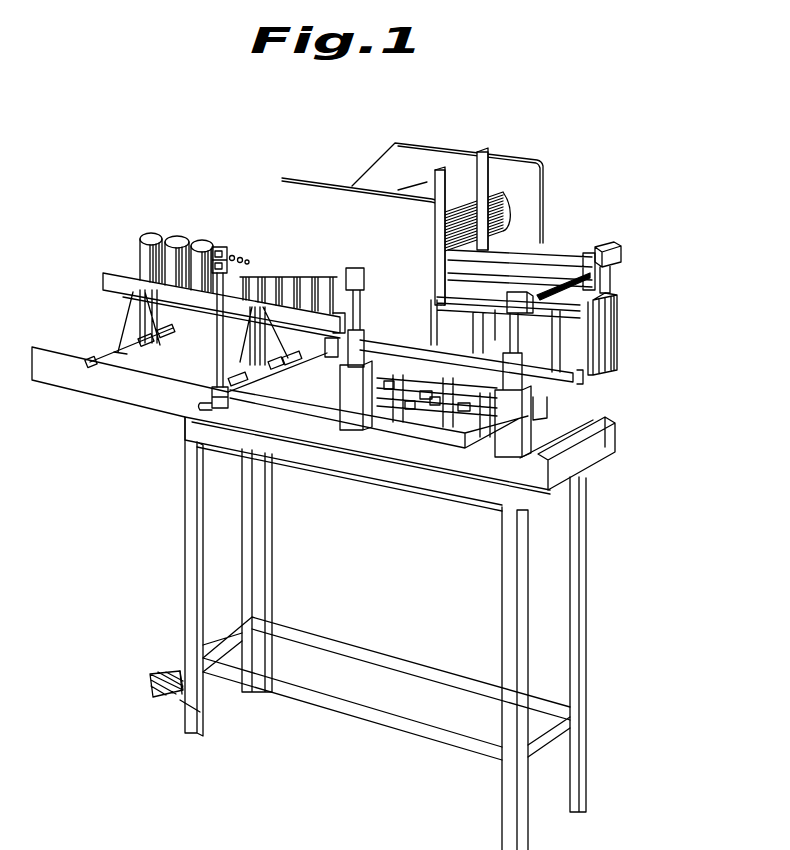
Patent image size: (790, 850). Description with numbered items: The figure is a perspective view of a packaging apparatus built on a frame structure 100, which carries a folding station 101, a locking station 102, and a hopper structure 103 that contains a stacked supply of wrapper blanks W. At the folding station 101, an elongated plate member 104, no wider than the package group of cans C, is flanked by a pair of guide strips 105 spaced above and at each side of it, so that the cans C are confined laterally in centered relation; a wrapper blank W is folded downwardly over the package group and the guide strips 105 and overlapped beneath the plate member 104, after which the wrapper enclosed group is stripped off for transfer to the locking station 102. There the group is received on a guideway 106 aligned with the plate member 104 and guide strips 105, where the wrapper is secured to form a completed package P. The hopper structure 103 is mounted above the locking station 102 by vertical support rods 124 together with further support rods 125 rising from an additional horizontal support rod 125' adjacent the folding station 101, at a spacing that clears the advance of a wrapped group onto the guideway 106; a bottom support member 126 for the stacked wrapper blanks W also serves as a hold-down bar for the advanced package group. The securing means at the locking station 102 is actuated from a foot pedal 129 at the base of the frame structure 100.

The frame structure 100 is at (173, 517).
The folding station 101 is at (212, 241).
The locking station 102 is at (560, 243).
The hopper structure 103 is at (451, 129).
The plate member 104 is at (118, 296).
The guide strips 105 is at (103, 278).
The guideway 106 is at (593, 377).
The vertical support rods 124 is at (367, 292).
The support rods 125 is at (253, 320).
The horizontal support rod 125' is at (213, 392).
The bottom support member 126 is at (614, 260).
The foot pedal 129 is at (160, 676).
The cans C is at (152, 234).
The wrapper blanks W is at (508, 202).
The completed package P is at (613, 300).